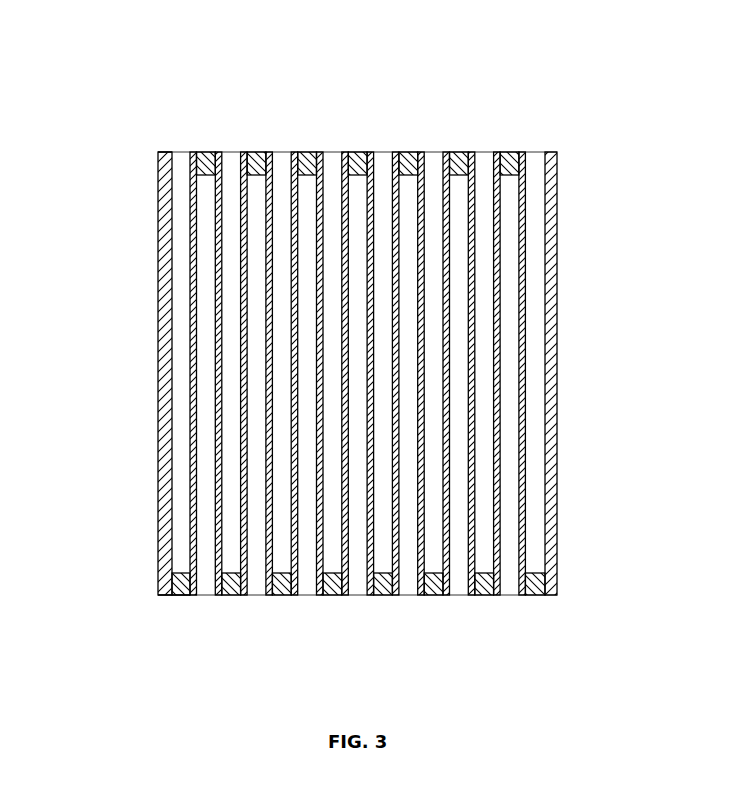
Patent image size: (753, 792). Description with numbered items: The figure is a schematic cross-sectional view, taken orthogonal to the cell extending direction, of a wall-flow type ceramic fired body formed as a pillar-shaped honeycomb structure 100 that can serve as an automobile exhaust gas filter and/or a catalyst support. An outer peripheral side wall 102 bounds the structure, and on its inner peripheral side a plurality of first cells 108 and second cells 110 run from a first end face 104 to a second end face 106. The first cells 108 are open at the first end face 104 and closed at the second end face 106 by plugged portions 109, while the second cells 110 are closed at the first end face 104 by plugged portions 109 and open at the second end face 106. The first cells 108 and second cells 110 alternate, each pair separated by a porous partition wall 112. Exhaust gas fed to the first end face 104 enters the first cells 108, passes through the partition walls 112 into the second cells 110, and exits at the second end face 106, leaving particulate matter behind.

The pillar-shaped honeycomb structure 100 is at (343, 112).
The outer peripheral side wall 102 is at (158, 198).
The first end face 104 is at (162, 595).
The second end face 106 is at (164, 150).
The first cells 108 is at (205, 595).
The plugged portions 109 is at (510, 153).
The second cells 110 is at (235, 153).
The partition wall 112 is at (190, 318).